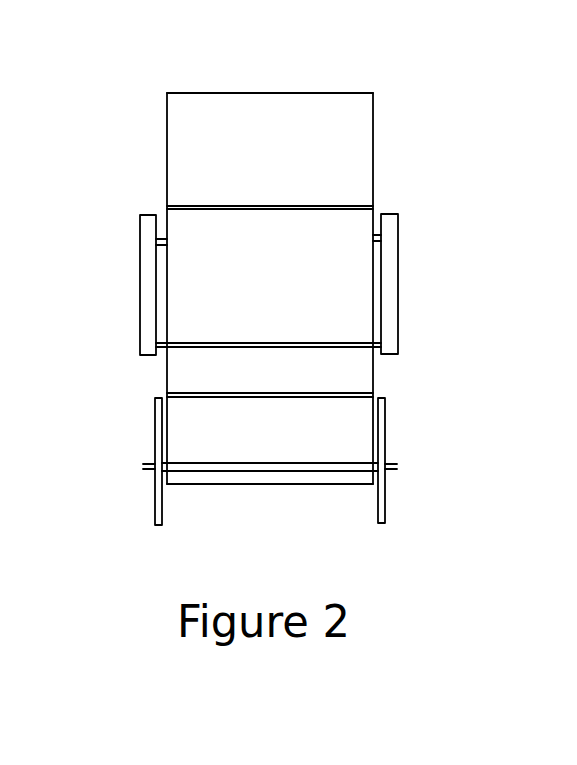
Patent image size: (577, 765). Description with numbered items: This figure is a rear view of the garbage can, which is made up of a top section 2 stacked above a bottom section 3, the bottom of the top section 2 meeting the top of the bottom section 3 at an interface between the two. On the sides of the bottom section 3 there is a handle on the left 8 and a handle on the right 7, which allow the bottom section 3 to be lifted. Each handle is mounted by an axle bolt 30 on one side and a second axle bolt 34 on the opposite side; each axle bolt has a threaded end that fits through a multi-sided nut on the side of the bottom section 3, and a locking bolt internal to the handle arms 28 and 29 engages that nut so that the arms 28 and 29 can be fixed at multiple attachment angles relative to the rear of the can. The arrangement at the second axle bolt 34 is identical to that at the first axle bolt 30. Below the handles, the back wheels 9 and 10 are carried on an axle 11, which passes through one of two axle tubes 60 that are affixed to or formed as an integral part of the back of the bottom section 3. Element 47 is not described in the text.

The top section 2 is at (303, 102).
The right handle 7 is at (372, 112).
The left handle 8 is at (167, 129).
The second axle bolt 34 is at (373, 217).
The axle bolt 30 is at (165, 240).
The handle arm 29 is at (392, 295).
The handle arm 28 is at (145, 322).
The middle divider plate 47 is at (227, 343).
The bottom section 3 is at (377, 378).
The back wheel 9 is at (385, 412).
The back wheel 10 is at (157, 440).
The axle 11 is at (398, 465).
The axle tube 60 is at (245, 397).